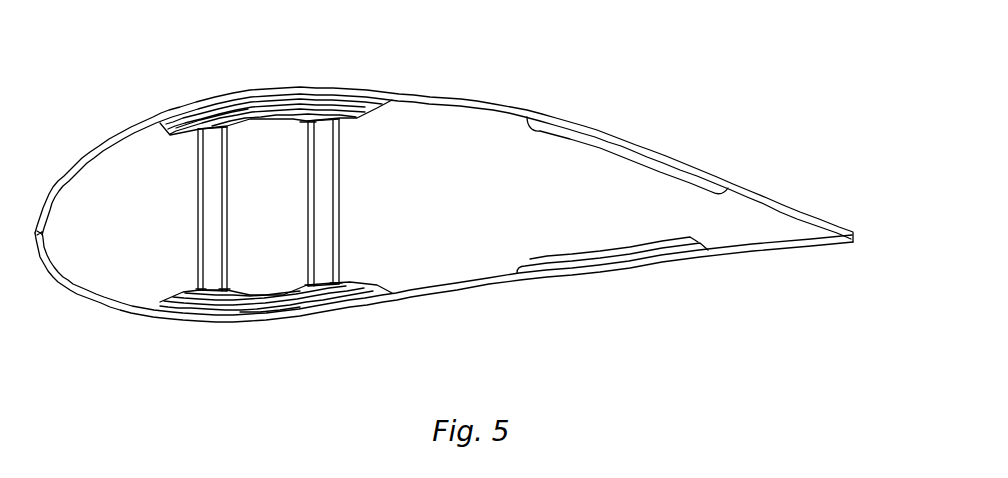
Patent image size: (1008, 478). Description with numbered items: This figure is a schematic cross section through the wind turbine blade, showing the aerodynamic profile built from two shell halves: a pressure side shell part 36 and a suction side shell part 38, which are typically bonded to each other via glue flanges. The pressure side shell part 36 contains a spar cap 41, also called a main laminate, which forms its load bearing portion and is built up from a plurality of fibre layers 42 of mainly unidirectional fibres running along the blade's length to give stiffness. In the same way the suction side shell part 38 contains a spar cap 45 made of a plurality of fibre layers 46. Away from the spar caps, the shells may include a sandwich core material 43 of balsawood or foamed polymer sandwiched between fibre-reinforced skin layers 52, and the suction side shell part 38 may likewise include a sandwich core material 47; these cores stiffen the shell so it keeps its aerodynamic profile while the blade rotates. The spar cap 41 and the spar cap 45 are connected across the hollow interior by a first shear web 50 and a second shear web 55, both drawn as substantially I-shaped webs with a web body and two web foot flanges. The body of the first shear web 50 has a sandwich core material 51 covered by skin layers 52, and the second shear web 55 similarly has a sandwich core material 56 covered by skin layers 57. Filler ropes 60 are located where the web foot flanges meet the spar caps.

The pressure side shell part 36 is at (490, 290).
The suction side shell part 38 is at (477, 101).
The spar cap 41 is at (347, 314).
The fibre layers 42 is at (268, 323).
The sandwich core material 43 is at (625, 259).
The spar cap 45 is at (243, 90).
The fibre layers 46 is at (345, 88).
The sandwich core material 47 is at (625, 137).
The first shear web 50 is at (234, 209).
The sandwich core material 51 is at (225, 238).
The skin layers 52 is at (228, 150).
The second shear web 55 is at (354, 202).
The sandwich core material of second shear web 56 is at (342, 195).
The skin layers of second shear web 57 is at (341, 175).
The filler ropes 60 is at (303, 125).